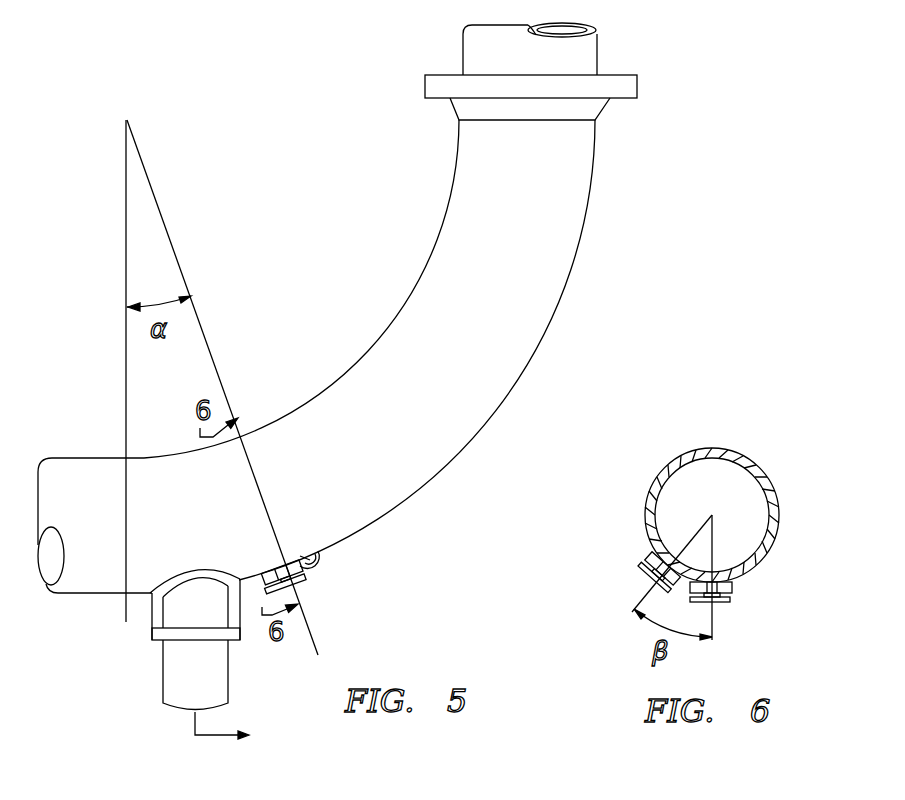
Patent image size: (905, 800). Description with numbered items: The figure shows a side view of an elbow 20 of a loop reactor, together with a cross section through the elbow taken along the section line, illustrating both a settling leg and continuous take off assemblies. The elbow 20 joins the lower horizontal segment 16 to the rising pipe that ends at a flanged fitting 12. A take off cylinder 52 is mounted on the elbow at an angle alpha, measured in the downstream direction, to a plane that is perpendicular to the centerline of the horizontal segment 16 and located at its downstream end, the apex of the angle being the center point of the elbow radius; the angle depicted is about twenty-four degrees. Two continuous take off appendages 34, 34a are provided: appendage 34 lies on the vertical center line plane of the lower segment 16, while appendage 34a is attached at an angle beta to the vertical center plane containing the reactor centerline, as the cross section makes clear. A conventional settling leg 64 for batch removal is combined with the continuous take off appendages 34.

In FIG. 5, the flanged inlet boss 12 is at (463, 50).
In FIG. 5, the horizontal segment 16 is at (98, 595).
In FIG. 5, the elbow conduit 20 is at (585, 237).
In FIG. 6, the elbow conduit 20 is at (768, 562).
In FIG. 5, the continuous take off appendage 34 is at (304, 592).
In FIG. 6, the continuous take off appendage 34 is at (734, 591).
In FIG. 5, the continuous take off appendage 34a is at (326, 556).
In FIG. 6, the continuous take off appendage 34a is at (650, 567).
In FIG. 5, the take off cylinder 52 is at (318, 572).
In FIG. 5, the settling leg 64 is at (213, 687).